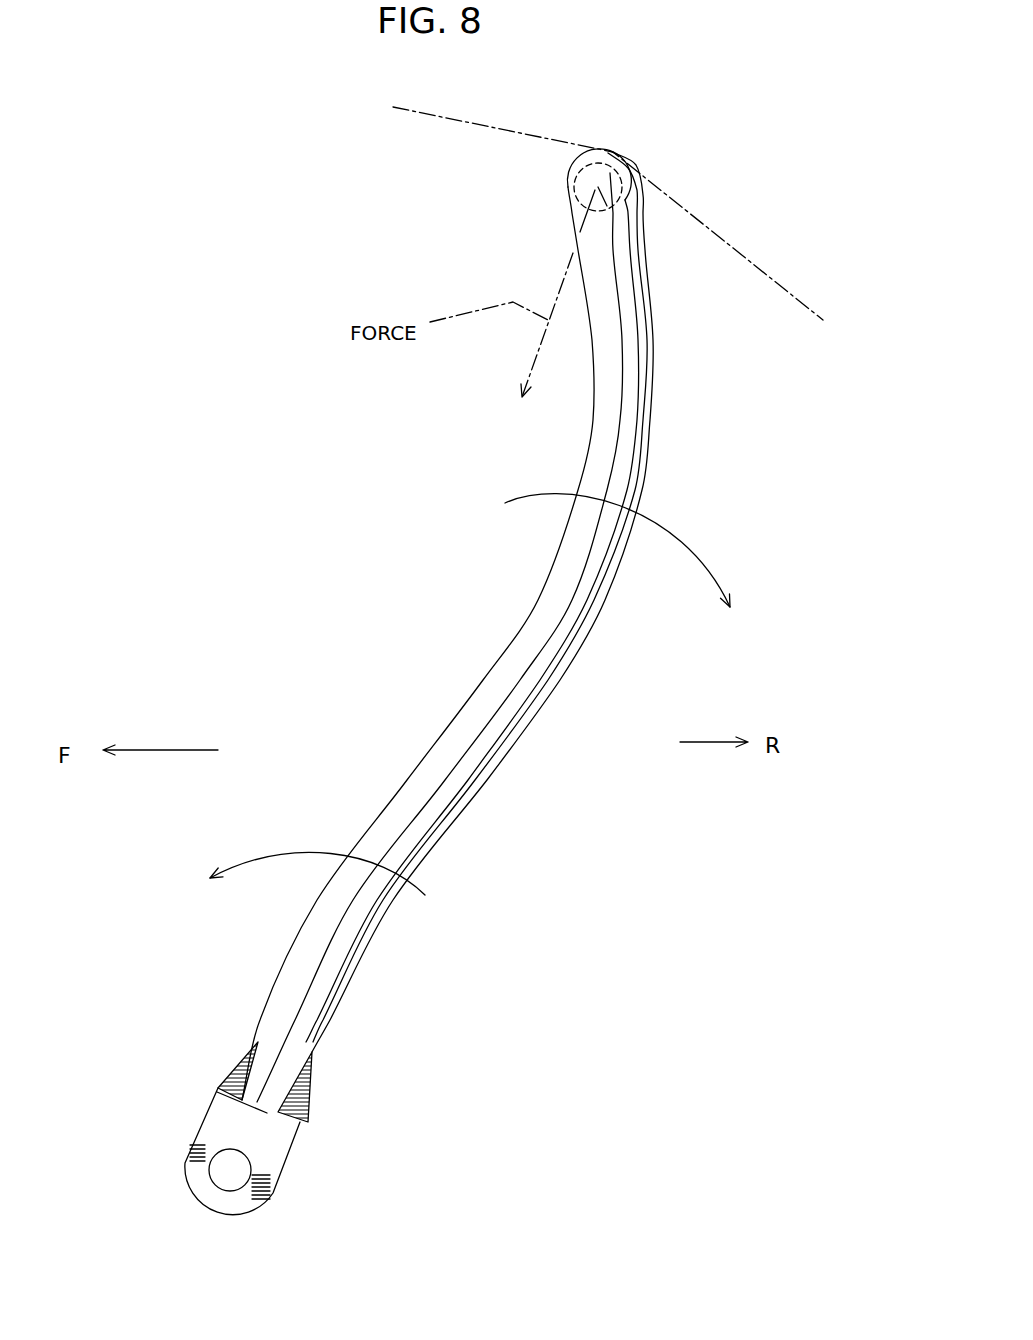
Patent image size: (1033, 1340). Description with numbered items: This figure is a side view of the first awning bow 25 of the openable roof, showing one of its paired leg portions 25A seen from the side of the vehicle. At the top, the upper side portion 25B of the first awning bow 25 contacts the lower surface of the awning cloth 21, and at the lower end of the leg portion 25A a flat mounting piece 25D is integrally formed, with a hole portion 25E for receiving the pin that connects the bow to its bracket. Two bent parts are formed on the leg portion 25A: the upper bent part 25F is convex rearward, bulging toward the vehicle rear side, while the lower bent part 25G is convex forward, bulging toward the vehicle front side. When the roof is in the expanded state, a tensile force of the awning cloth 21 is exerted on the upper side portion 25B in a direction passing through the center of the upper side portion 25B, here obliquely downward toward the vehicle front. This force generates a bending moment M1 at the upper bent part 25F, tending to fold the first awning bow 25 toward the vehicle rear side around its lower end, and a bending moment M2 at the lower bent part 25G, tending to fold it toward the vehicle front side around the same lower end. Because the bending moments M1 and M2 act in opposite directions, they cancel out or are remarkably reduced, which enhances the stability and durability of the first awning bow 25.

The awning cloth 21 is at (733, 243).
The first awning bow 25 is at (413, 661).
The leg portion 25A is at (458, 738).
The upper side portion 25B is at (593, 153).
The mounting piece 25D is at (278, 1150).
The hole portion 25E is at (217, 1193).
The upper bent part 25F is at (607, 513).
The lower bent part 25G is at (372, 887).
The bending moment M1 is at (695, 543).
The bending moment M2 is at (273, 852).